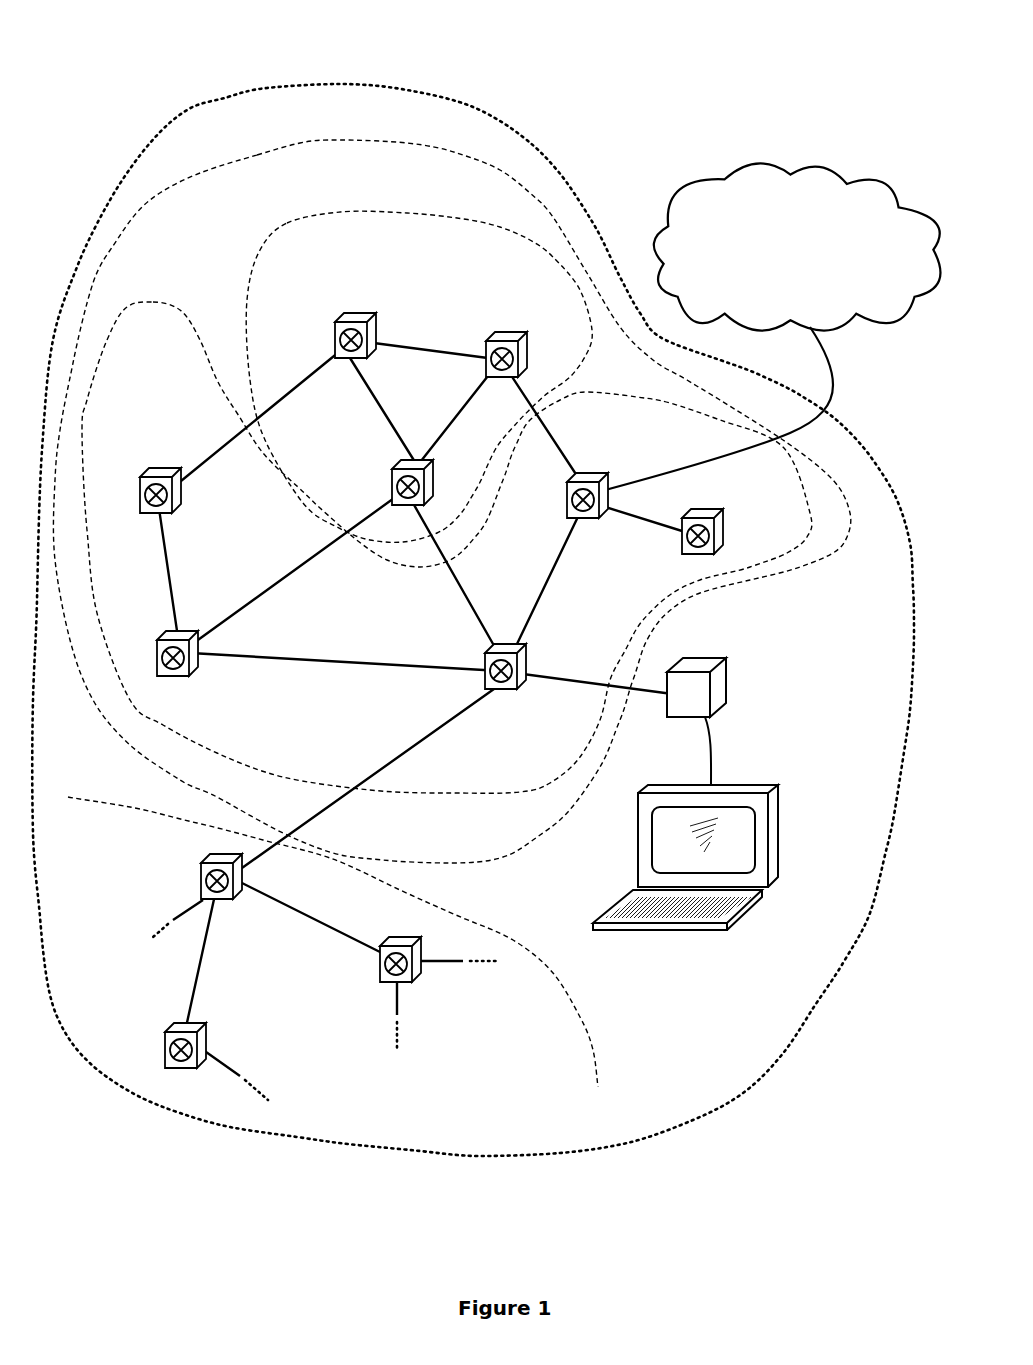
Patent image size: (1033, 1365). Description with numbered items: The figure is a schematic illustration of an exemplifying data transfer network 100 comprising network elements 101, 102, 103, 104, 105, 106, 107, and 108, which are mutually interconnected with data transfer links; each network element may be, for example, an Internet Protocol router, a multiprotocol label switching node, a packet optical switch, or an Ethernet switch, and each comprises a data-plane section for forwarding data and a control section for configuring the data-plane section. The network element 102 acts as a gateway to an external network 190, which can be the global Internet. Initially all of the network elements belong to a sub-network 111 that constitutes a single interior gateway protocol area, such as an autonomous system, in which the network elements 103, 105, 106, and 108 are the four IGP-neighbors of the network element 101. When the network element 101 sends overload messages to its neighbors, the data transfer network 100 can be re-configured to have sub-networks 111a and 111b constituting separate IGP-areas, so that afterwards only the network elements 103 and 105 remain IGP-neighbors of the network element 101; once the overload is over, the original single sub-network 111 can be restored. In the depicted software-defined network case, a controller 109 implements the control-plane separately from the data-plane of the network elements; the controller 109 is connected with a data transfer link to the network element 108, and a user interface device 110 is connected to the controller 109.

The data transfer network 100 is at (229, 97).
The sub-network 111 is at (257, 155).
The sub-network 111a is at (288, 224).
The sub-network 111b is at (372, 792).
The network element 101 is at (392, 489).
The network element 102 is at (567, 508).
The network element 103 is at (500, 340).
The network element 104 is at (716, 521).
The network element 105 is at (357, 321).
The network element 106 is at (177, 677).
The network element 107 is at (140, 500).
The network element 108 is at (502, 689).
The controller 109 is at (711, 676).
The user interface device 110 is at (762, 792).
The external network 190 is at (826, 256).